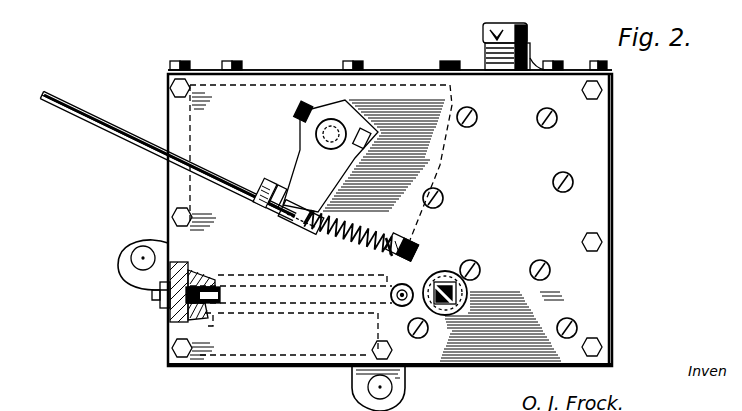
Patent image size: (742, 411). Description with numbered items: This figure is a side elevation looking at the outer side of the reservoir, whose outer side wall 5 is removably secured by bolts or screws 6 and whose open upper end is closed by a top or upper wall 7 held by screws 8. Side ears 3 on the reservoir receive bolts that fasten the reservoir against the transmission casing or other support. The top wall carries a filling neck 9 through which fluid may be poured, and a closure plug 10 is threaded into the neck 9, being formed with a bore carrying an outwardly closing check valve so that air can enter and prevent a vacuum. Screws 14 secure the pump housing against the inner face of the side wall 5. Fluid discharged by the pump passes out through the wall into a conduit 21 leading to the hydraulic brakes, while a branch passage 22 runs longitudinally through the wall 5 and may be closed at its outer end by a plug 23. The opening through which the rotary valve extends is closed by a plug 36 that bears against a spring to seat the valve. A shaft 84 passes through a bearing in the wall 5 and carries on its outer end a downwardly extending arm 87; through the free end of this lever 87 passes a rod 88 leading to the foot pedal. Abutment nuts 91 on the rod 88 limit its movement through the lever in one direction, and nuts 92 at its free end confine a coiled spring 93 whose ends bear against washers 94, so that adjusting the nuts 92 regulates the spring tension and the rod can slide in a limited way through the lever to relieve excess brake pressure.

The side ears 3 is at (138, 243).
The outer side wall 5 is at (597, 162).
The bolts or screws 6 is at (168, 88).
The top or upper wall 7 is at (272, 70).
The screws 8 is at (222, 60).
The filling neck 9 is at (532, 58).
The closure plug 10 is at (510, 25).
The screws 14 is at (440, 190).
The conduit 21 is at (412, 283).
The branch passage 22 is at (210, 280).
The plug 23 is at (158, 302).
The plug 36 is at (462, 290).
The shaft 84 is at (320, 134).
The arm 87 is at (300, 168).
The rod 88 is at (100, 120).
The abutment nuts 91 is at (262, 207).
The nuts 92 is at (418, 246).
The coiled spring 93 is at (330, 240).
The washers 94 is at (382, 257).